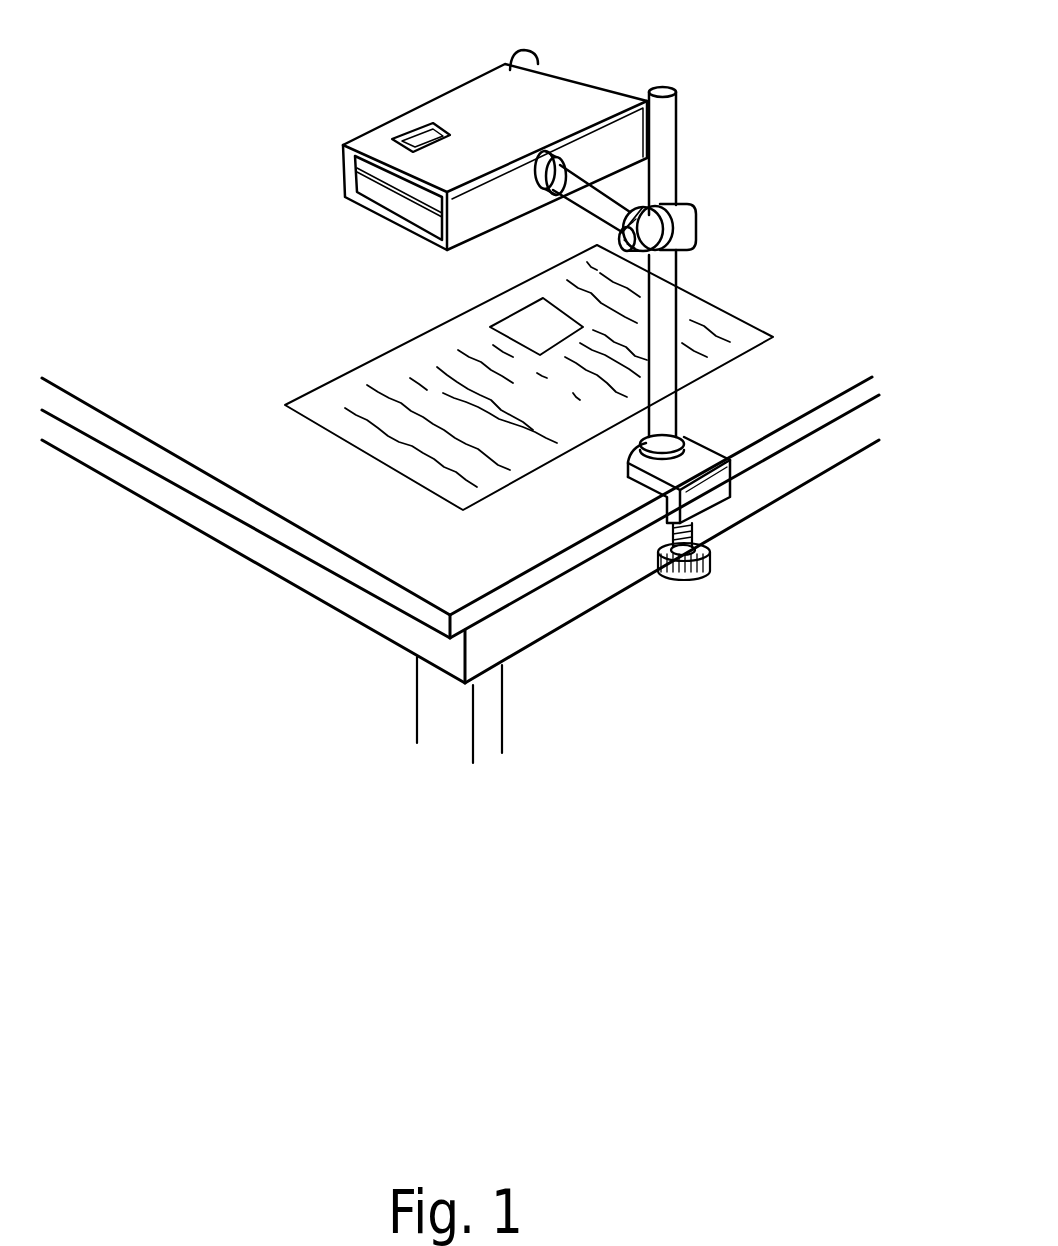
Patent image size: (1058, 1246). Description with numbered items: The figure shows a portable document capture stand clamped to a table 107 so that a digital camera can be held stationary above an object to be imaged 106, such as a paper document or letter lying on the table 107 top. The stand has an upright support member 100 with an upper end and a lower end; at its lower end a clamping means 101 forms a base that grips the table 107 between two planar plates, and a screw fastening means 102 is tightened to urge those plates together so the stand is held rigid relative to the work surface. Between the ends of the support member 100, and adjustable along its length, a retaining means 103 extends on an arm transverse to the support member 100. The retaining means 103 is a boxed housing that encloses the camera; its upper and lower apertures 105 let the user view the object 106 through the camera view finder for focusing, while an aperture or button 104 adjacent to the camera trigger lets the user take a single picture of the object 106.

The upright support member 100 is at (663, 312).
The clamping means 101 is at (693, 455).
The screw fastening means 102 is at (710, 557).
The retaining means 103 is at (593, 72).
The aperture or button 104 is at (503, 62).
The upper and lower apertures 105 is at (395, 134).
The object to be imaged 106 is at (305, 395).
The table 107 is at (278, 483).